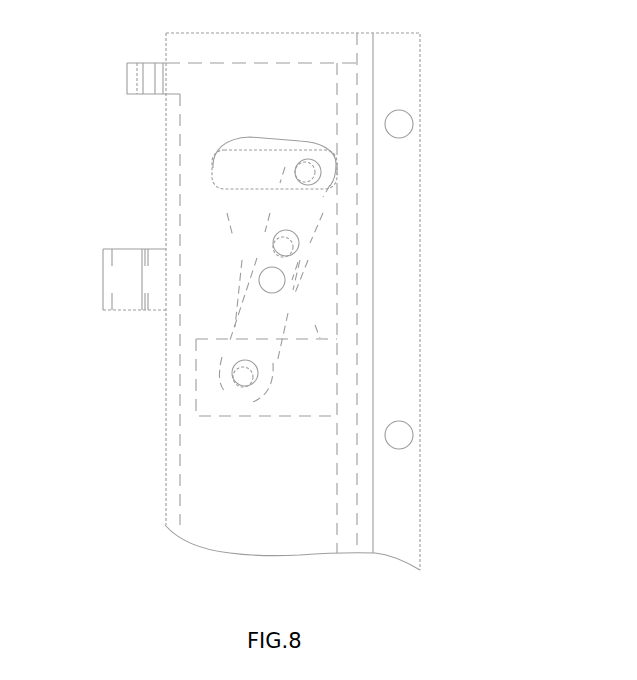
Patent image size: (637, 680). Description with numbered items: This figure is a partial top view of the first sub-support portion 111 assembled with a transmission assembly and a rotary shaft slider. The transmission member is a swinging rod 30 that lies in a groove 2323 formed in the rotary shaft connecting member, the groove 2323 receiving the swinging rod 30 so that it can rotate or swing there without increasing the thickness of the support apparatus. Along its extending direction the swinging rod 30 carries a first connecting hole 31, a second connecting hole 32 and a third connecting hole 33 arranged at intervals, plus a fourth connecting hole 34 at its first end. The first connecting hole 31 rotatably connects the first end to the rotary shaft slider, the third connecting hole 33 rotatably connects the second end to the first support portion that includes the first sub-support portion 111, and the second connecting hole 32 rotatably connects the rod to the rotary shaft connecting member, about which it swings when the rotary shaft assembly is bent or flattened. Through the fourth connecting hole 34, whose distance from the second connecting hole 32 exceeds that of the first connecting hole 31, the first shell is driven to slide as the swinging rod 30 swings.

The first sub-support portion 111 is at (398, 70).
The fourth connecting hole 34 is at (308, 172).
The swinging rod 30 is at (284, 337).
The first connecting hole 31 is at (286, 243).
The second connecting hole 32 is at (272, 280).
The third connecting hole 33 is at (245, 373).
The groove 2323 is at (307, 280).